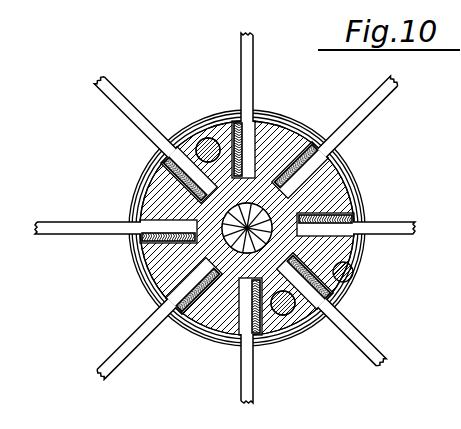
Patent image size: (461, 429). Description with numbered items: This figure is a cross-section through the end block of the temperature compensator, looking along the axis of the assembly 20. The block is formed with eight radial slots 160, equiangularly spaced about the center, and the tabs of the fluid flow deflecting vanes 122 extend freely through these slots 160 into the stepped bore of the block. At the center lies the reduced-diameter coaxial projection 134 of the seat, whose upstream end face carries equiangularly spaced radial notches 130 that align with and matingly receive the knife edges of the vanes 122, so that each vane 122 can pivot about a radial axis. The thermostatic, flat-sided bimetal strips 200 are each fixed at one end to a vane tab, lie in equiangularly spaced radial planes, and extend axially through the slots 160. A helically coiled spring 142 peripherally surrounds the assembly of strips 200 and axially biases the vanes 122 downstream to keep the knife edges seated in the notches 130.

The clutch assembly 20 is at (418, 228).
The fluid flow deflecting vanes 122 is at (252, 45).
The notches 130 is at (262, 232).
The coaxial projection 134 is at (258, 205).
The helically coiled spring 142 is at (292, 120).
The radial slots 160 is at (241, 134).
The bimetal strips 200 is at (207, 138).